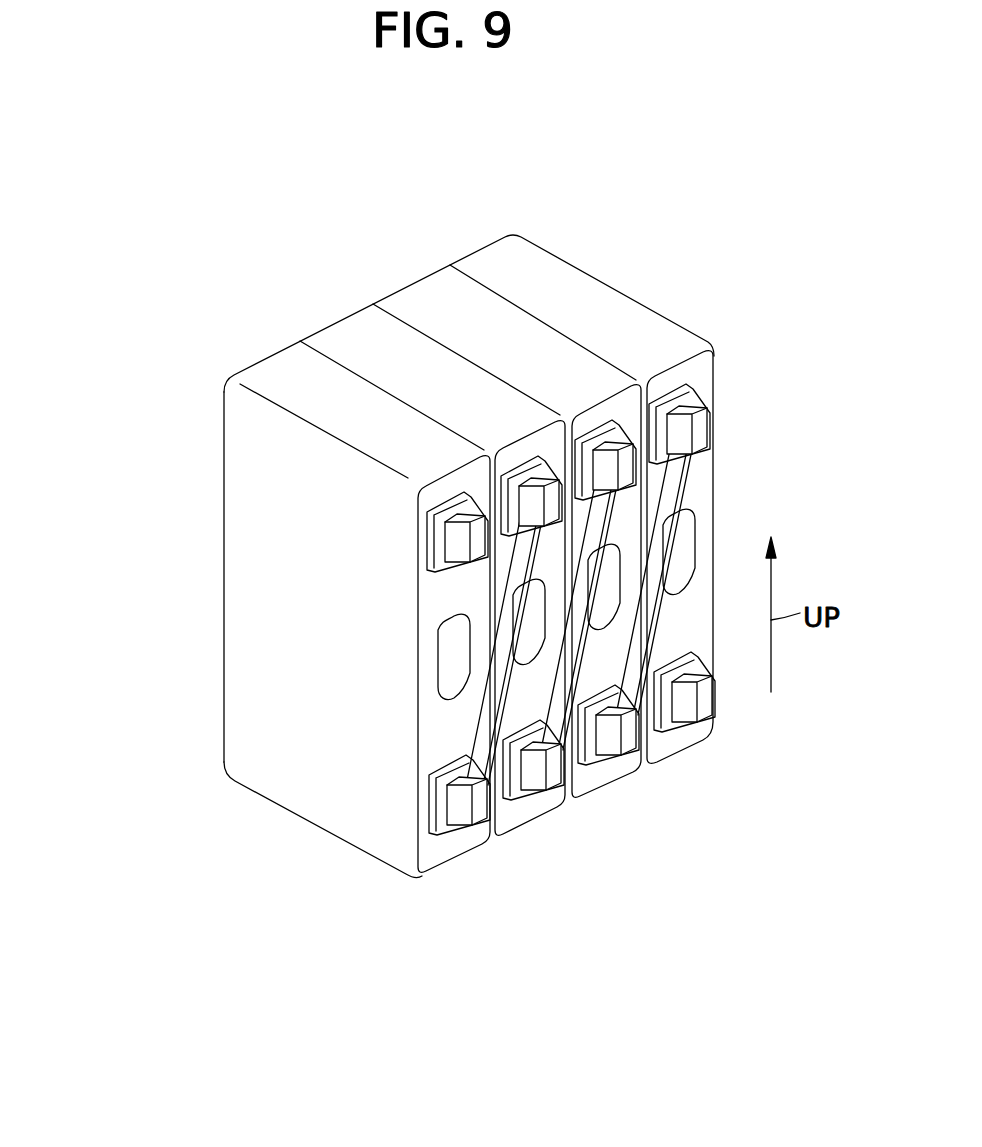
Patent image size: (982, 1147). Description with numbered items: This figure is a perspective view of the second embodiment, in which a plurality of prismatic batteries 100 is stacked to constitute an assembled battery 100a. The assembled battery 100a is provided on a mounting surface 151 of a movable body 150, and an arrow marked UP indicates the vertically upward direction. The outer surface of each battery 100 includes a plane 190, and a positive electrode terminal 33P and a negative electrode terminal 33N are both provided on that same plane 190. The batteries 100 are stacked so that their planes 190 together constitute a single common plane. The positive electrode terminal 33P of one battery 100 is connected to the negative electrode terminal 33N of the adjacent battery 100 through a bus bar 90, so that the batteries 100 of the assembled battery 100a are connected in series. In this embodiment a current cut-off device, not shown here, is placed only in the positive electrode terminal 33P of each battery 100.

The prismatic battery 100 is at (622, 288).
The assembled battery 100a is at (125, 390).
The movable body 150 is at (215, 588).
The mounting surface 151 is at (280, 831).
The plane 190 is at (428, 650).
The positive electrode terminal 33P is at (468, 518).
The negative electrode terminal 33N is at (463, 810).
The bus bar 90 is at (490, 717).